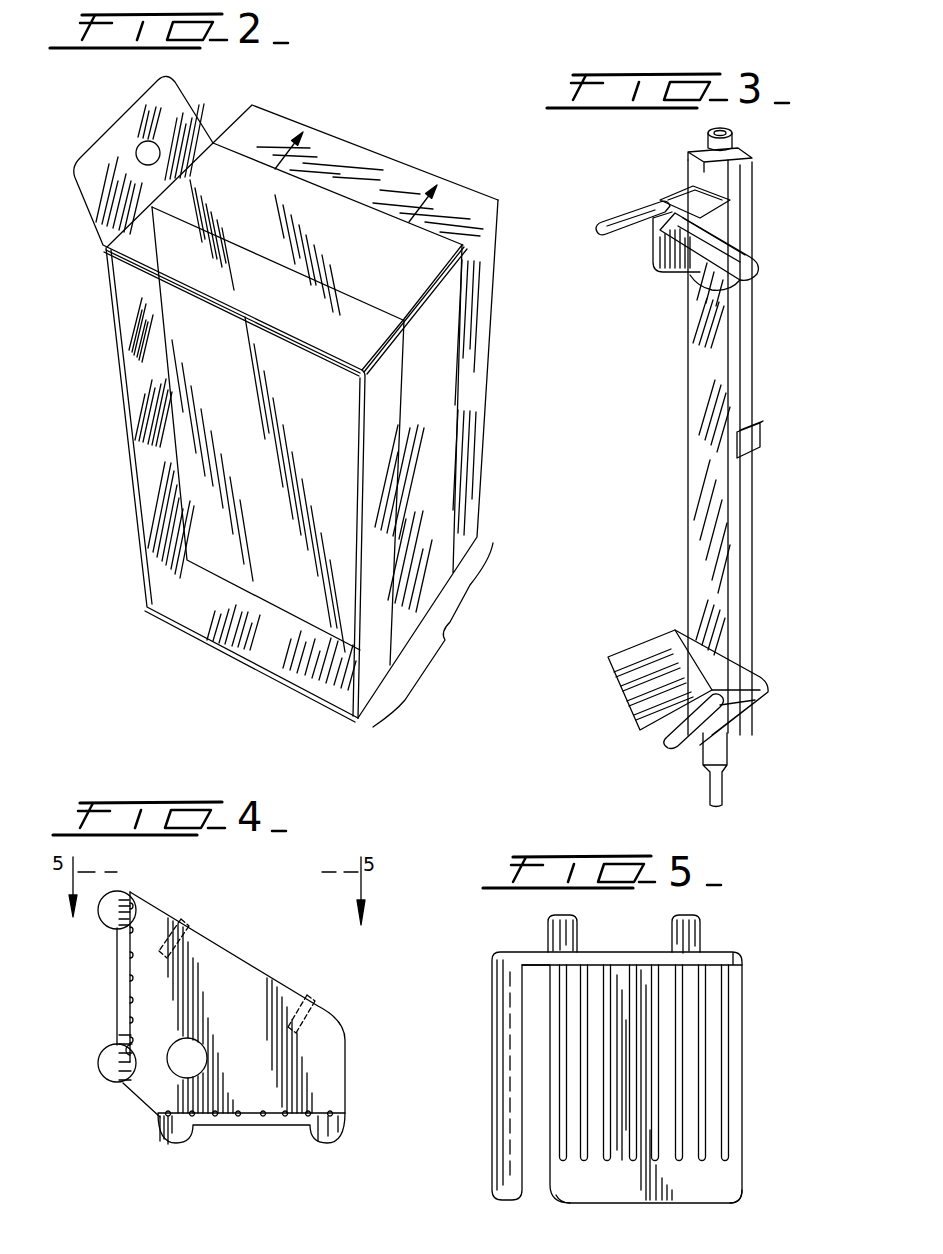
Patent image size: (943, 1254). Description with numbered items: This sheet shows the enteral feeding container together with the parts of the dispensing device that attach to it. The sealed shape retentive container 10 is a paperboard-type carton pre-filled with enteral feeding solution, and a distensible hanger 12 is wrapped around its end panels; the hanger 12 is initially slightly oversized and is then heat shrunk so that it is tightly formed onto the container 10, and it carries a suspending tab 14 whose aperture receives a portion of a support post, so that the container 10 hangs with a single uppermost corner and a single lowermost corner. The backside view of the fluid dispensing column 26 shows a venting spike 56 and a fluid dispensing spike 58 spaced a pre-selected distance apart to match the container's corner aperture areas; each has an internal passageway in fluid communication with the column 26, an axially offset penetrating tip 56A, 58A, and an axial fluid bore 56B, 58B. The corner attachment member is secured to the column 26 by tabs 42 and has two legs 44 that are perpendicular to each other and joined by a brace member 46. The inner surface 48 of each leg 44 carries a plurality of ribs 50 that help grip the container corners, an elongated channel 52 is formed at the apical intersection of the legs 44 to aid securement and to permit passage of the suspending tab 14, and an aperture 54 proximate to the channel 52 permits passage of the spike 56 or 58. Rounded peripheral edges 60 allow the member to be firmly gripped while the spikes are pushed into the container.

In FIG. 2, the sealed shape retentive container 10 is at (264, 401).
In FIG. 2, the distensible hanger 12 is at (133, 497).
In FIG. 2, the suspending tab 14 is at (83, 203).
In FIG. 3, the fluid dispensing column 26 is at (688, 507).
In FIG. 3, the spike 56 is at (661, 241).
In FIG. 3, the penetrating tip 56A is at (663, 233).
In FIG. 3, the axial fluid bore 56B is at (668, 247).
In FIG. 3, the spike 58 is at (670, 673).
In FIG. 3, the penetrating tip 58A is at (672, 690).
In FIG. 3, the axial fluid bore 58B is at (672, 703).
In FIG. 4, the tabs 42 is at (186, 924).
In FIG. 5, the tabs 42 is at (548, 930).
In FIG. 4, the legs 44 is at (117, 978).
In FIG. 5, the legs 44 is at (497, 1198).
In FIG. 4, the brace member 46 is at (315, 1068).
In FIG. 5, the brace member 46 is at (620, 953).
In FIG. 4, the inner surface 48 is at (322, 1110).
In FIG. 5, the inner surface 48 is at (712, 1185).
In FIG. 4, the ribs 50 is at (130, 1030).
In FIG. 5, the ribs 50 is at (700, 1070).
In FIG. 5, the elongated channel 52 is at (540, 1185).
In FIG. 4, the aperture 54 is at (183, 1060).
In FIG. 4, the rounded peripheral edges 60 is at (105, 915).